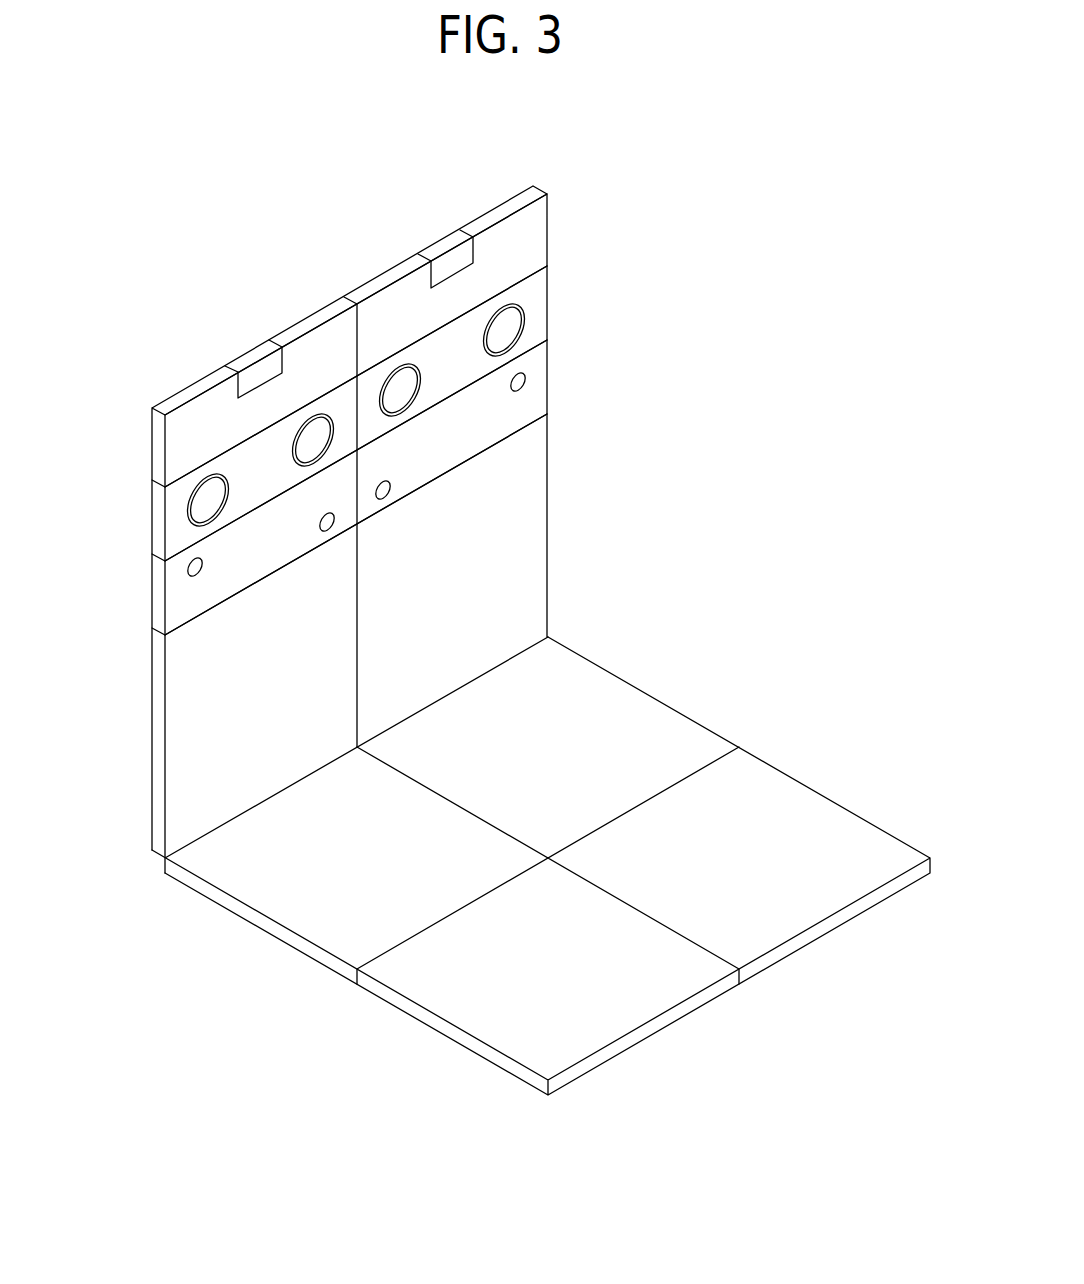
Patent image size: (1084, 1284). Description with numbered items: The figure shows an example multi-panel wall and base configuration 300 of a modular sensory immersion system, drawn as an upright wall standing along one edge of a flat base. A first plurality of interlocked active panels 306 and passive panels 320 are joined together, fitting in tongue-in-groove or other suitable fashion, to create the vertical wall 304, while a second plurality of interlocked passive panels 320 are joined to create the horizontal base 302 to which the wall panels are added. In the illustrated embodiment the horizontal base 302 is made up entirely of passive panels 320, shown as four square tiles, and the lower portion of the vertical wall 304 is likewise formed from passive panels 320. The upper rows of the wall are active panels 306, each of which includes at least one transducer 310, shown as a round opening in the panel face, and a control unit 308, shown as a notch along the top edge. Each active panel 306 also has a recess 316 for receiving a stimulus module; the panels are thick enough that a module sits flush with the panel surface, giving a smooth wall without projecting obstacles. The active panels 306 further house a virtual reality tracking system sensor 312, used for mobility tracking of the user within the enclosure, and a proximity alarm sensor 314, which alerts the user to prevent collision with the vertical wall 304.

The multi-panel wall and base configuration 300 is at (814, 289).
The horizontal base 302 is at (450, 1139).
The vertical wall 304 is at (655, 204).
The active panel 306 is at (196, 420).
The control unit 308 is at (256, 376).
The transducer 310 is at (205, 505).
The virtual reality tracking system sensor 312 is at (195, 567).
The proximity alarm sensor 314 is at (327, 524).
The recess 316 is at (245, 562).
The passive panel 320 is at (245, 705).